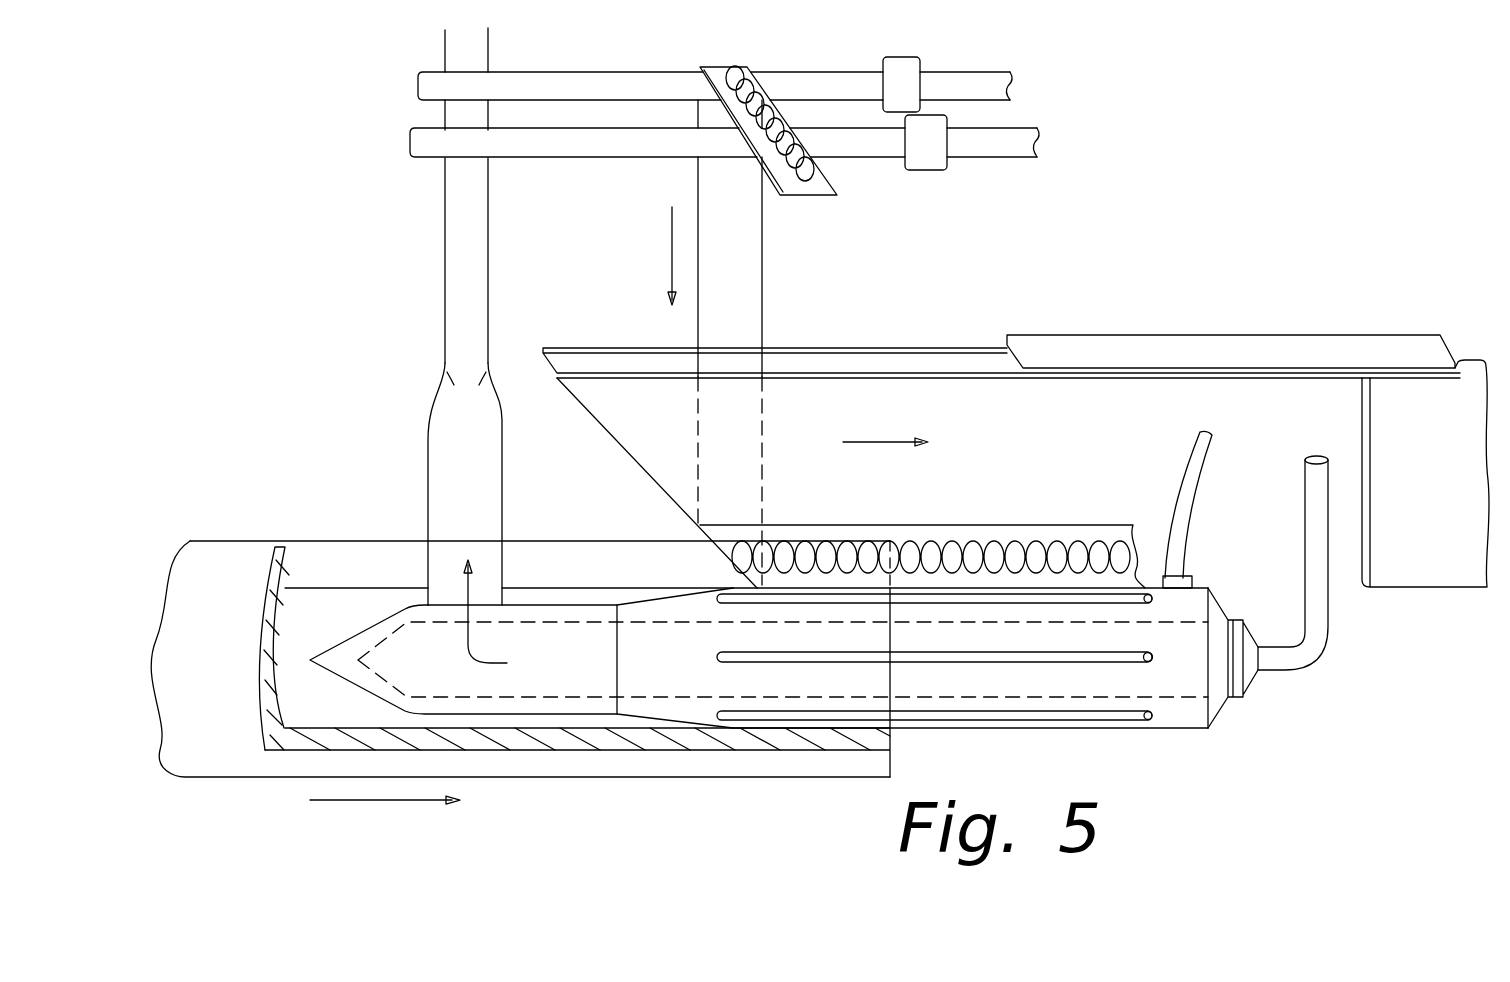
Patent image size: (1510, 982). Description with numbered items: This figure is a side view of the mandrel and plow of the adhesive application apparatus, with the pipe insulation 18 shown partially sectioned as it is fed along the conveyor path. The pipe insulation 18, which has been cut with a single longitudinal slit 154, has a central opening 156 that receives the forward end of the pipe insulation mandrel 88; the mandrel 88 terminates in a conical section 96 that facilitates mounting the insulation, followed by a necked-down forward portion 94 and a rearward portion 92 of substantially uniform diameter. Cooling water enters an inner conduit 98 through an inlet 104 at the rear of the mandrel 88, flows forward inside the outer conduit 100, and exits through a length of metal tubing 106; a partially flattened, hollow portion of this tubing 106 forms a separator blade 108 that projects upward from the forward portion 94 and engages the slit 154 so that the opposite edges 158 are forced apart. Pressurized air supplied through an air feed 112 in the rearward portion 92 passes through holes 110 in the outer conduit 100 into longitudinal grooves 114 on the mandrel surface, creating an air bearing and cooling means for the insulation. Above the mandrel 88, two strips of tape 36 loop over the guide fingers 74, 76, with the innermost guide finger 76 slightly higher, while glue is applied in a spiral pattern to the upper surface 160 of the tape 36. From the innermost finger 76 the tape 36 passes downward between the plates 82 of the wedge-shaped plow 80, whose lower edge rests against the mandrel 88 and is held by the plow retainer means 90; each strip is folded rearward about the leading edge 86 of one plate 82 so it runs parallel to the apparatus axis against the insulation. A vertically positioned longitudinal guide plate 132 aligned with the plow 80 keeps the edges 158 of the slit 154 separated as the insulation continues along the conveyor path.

The pipe insulation 18 is at (218, 633).
The tape 36 is at (748, 283).
The guide finger 74 is at (1005, 135).
The innermost guide finger 76 is at (967, 82).
The plow 80 is at (1043, 438).
The plates 82 is at (598, 356).
The leading edge 86 is at (600, 428).
The pipe insulation mandrel 88 is at (672, 597).
The plow retainer means 90 is at (1120, 340).
The rearward portion 92 is at (960, 690).
The forward portion 94 is at (567, 635).
The conical section 96 is at (348, 638).
The inner conduit 98 is at (1182, 621).
The outer conduit 100 is at (1160, 727).
The inlet 104 is at (1287, 660).
The metal tubing 106 is at (480, 232).
The separator blade 108 is at (440, 420).
The holes 110 is at (1146, 661).
The air feed 112 is at (1190, 473).
The longitudinal grooves 114 is at (1002, 655).
The longitudinal guide plate 132 is at (1432, 464).
The longitudinal slit 154 is at (245, 541).
The central opening 156 is at (292, 677).
The edges 158 is at (333, 558).
The upper surface 160 is at (762, 70).